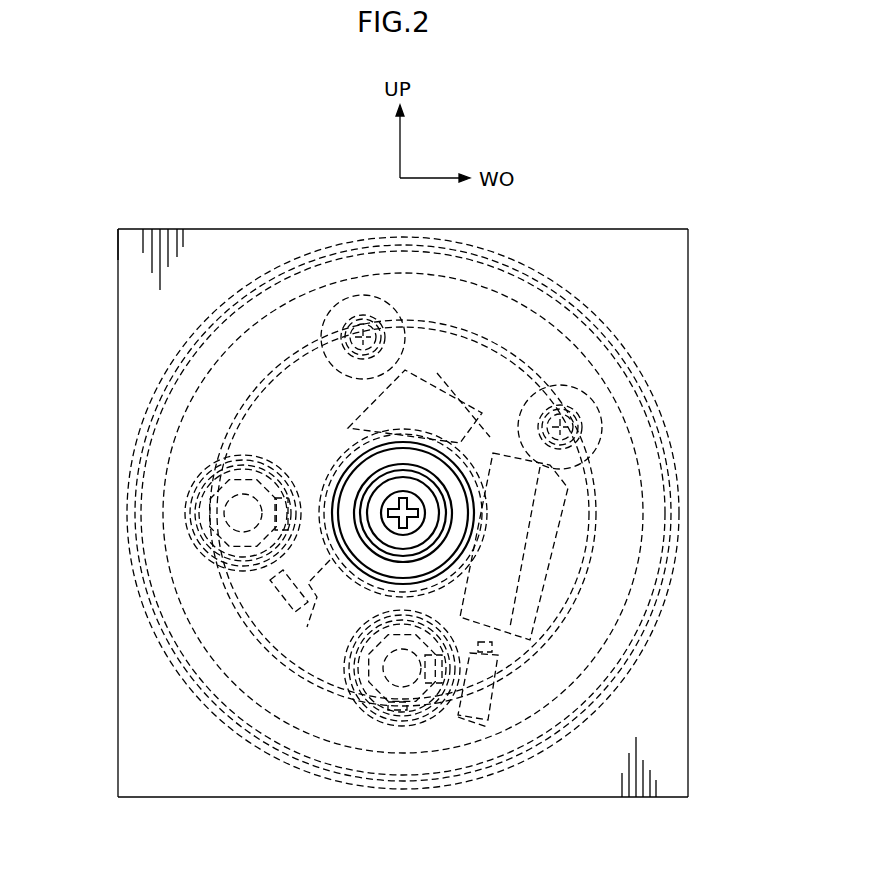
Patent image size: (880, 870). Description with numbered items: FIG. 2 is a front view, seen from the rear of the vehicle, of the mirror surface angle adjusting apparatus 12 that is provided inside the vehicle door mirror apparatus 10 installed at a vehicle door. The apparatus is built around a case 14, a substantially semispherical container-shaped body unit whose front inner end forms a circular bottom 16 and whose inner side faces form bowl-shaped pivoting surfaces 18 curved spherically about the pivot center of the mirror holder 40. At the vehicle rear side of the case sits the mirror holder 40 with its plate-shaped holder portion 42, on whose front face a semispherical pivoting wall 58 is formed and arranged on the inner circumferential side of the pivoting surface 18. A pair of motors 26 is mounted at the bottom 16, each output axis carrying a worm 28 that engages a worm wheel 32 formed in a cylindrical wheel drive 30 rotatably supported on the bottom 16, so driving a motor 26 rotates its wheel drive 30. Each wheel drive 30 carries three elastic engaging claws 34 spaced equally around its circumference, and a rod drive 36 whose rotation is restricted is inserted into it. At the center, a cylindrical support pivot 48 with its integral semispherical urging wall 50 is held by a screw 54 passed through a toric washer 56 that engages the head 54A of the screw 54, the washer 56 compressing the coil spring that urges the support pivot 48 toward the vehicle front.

The mirror surface angle adjusting apparatus 12 is at (163, 185).
The vehicle door mirror apparatus 10 is at (140, 179).
The mirror holder 40 is at (116, 352).
The holder portion 42 is at (690, 345).
The case 14 is at (598, 311).
The pivoting wall 58 is at (225, 352).
The bottom 16 is at (300, 411).
The motor 26 is at (373, 401).
The head 54A is at (424, 478).
The pivoting surface 18 is at (520, 343).
The wheel drive 30 is at (233, 442).
The engaging claw 34 is at (212, 470).
The rod drive 36 is at (222, 505).
The screw 54 is at (357, 470).
The urging wall 50 is at (470, 495).
The support pivot 48 is at (457, 515).
The washer 56 is at (420, 545).
The worm wheel 32 is at (195, 562).
The worm 28 is at (338, 660).